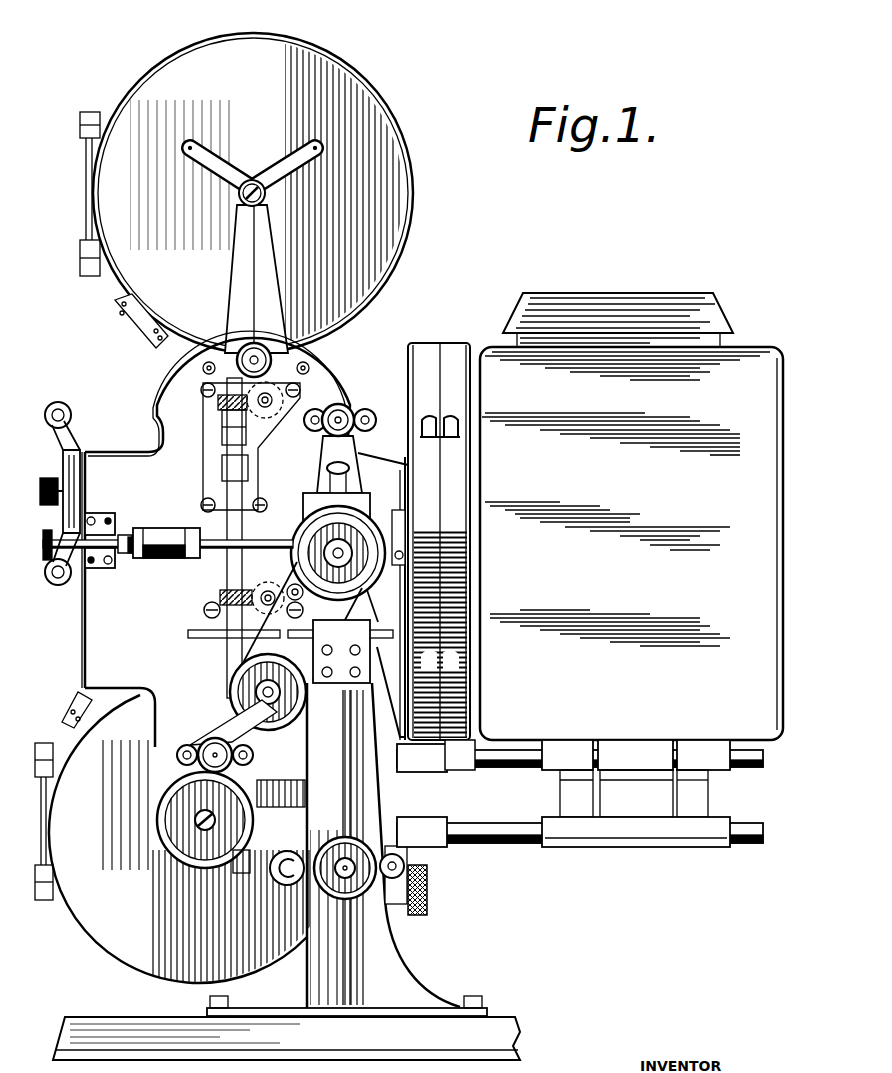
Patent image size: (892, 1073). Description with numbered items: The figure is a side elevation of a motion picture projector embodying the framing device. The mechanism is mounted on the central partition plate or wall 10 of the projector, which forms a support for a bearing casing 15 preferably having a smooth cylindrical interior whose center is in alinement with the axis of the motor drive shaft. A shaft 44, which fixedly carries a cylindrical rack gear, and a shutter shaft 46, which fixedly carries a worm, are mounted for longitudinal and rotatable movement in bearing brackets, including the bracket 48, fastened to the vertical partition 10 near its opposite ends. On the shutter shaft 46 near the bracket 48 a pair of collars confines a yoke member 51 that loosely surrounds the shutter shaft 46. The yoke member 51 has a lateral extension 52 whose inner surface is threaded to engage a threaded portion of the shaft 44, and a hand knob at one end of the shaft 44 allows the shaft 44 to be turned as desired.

The central partition plate 10 is at (221, 660).
The bearing casing 15 is at (306, 518).
The shaft 44 is at (212, 549).
The shutter shaft 46 is at (121, 535).
The bearing bracket 48 is at (93, 518).
The yoke member 51 is at (164, 540).
The lateral extension 52 is at (49, 493).